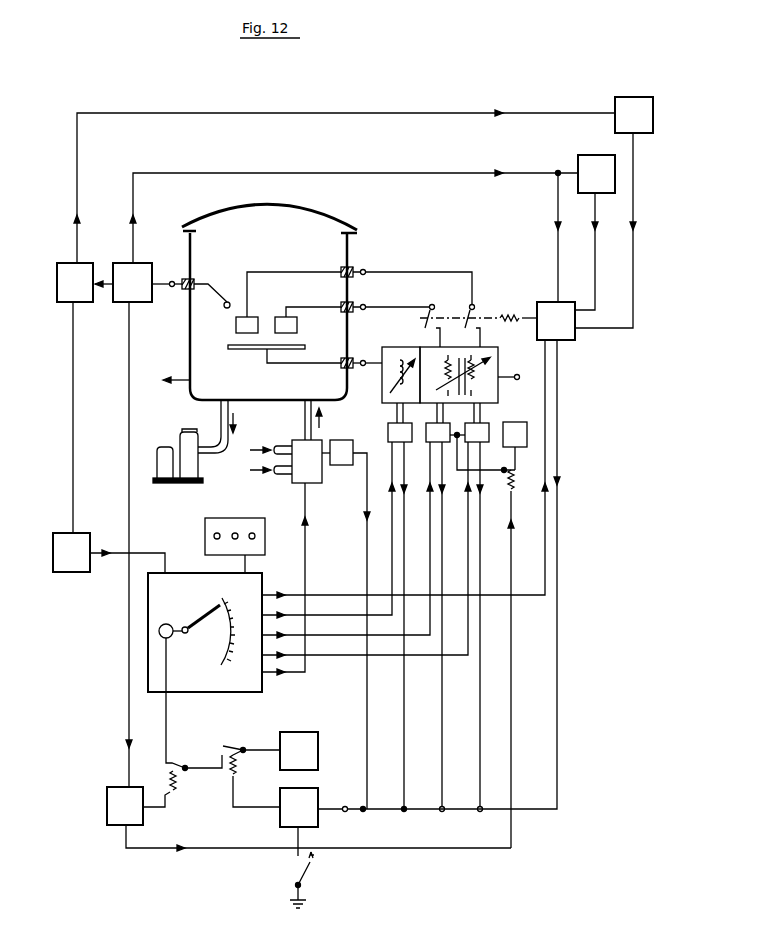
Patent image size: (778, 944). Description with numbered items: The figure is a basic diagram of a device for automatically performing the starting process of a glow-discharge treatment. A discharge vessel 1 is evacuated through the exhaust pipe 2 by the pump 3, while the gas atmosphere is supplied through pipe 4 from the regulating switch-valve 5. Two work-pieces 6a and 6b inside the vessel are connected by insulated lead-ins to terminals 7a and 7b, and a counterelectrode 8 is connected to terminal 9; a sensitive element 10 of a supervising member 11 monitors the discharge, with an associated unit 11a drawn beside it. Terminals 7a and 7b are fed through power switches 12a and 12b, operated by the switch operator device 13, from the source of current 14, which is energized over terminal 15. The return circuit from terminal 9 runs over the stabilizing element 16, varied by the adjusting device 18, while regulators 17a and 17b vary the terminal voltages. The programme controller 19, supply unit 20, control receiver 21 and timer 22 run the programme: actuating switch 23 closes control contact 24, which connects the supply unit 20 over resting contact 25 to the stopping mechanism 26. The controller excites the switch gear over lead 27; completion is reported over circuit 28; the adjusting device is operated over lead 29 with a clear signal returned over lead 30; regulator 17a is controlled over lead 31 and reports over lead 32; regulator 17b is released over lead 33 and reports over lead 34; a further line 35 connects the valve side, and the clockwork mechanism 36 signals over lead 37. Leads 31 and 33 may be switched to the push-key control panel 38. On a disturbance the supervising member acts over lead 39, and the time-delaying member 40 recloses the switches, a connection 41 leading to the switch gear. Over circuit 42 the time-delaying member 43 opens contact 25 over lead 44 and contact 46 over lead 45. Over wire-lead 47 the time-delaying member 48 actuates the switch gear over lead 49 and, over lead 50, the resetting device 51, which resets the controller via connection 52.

The discharge vessel 1 is at (325, 216).
The exhaust pipe 2 is at (221, 425).
The pump 3 is at (198, 456).
The pipe 4 is at (305, 424).
The regulating switch-valve 5 is at (322, 484).
The work-piece 6a is at (236, 325).
The work-piece 6b is at (297, 325).
The terminal 7a is at (406, 282).
The terminal 7b is at (386, 301).
The counterelectrode 8 is at (252, 350).
The terminal 9 is at (361, 374).
The sensitive element 10 is at (211, 293).
The supervising member 11 is at (152, 264).
The auxiliary unit 11a is at (93, 303).
The power switch 12a is at (484, 319).
The power switch 12b is at (478, 319).
The switch operator device 13 is at (575, 340).
The source of current 14 is at (498, 352).
The terminal 15 is at (519, 377).
The stabilizing element 16 is at (382, 347).
The regulator 17a is at (488, 442).
The regulator 17b is at (426, 442).
The adjusting device 18 is at (388, 424).
The programme controller 19 is at (262, 692).
The supply unit 20 is at (318, 736).
The control receiver 21 is at (318, 794).
The timer 22 is at (527, 422).
The switch 23 is at (292, 867).
The control contact 24 is at (251, 767).
The resting contact 25 is at (194, 704).
The stopping mechanism 26 is at (166, 624).
The lead 27 is at (312, 595).
The circuit 28 is at (557, 614).
The lead 29 is at (318, 616).
The lead 30 is at (404, 680).
The lead 31 is at (336, 657).
The lead 32 is at (480, 680).
The lead 33 is at (332, 636).
The lead 34 is at (442, 680).
The control line 35 is at (312, 547).
The clockwork mechanism 36 is at (357, 440).
The lead 37 is at (366, 534).
The push-key control panel 38 is at (206, 518).
The lead 39 is at (133, 214).
The time-delaying member 40 is at (578, 156).
The line 41 is at (594, 248).
The circuit 42 is at (122, 544).
The time-delaying member 43 is at (107, 788).
The lead 44 is at (165, 810).
The lead 45 is at (212, 848).
The contact 46 is at (506, 470).
The wire-lead 47 is at (77, 212).
The time-delaying member 48 is at (615, 98).
The lead 49 is at (633, 190).
The lead 50 is at (85, 417).
The resetting device 51 is at (86, 572).
The line 52 is at (143, 554).